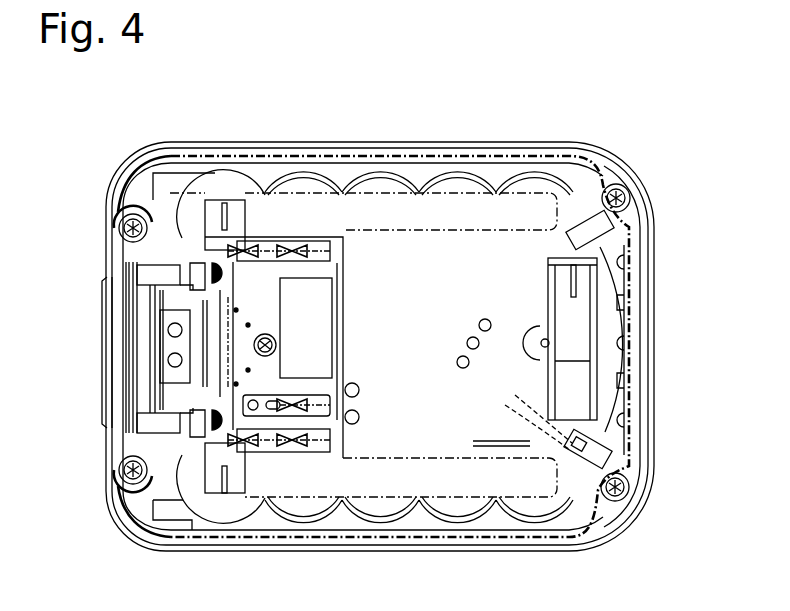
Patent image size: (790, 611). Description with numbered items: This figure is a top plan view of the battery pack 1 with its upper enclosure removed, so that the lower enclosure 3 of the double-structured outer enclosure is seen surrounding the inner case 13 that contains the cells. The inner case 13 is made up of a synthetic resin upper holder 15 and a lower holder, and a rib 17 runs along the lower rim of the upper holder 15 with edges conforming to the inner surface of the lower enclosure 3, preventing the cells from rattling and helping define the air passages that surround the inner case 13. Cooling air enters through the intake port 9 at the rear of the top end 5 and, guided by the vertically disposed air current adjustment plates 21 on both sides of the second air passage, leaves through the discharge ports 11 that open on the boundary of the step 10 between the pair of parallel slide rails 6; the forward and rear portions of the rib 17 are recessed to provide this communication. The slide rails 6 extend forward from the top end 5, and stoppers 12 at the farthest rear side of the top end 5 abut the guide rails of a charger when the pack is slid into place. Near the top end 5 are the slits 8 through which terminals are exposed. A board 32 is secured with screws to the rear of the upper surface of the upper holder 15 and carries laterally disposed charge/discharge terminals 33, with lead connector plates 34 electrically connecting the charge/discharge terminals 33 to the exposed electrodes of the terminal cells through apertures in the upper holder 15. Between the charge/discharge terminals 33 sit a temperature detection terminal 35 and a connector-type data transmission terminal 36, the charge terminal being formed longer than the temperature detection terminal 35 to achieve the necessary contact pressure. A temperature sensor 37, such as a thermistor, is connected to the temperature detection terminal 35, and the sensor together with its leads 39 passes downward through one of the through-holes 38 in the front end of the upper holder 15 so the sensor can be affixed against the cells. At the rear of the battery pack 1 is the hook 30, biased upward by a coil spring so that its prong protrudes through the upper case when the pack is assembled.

The battery pack 1 is at (509, 136).
The lower enclosure 3 is at (620, 173).
The top end 5 is at (163, 233).
The slide rails 6 is at (466, 190).
The slits 8 is at (256, 241).
The intake port 9 is at (140, 298).
The step 10 is at (651, 223).
The discharge ports 11 is at (632, 265).
The stoppers 12 is at (178, 150).
The inner case 13 is at (397, 154).
The upper holder 15 is at (318, 175).
The rib 17 is at (360, 162).
The air current adjustment plates 21 is at (632, 308).
The hook 30 is at (120, 352).
The board 32 is at (333, 267).
The charge/discharge terminals 33 is at (300, 240).
The lead connector plates 34 is at (214, 200).
The temperature detection terminal 35 is at (330, 383).
The data transmission terminal 36 is at (326, 326).
The temperature sensor 37 is at (648, 473).
The through-holes 38 is at (641, 203).
The leads 39 is at (538, 420).